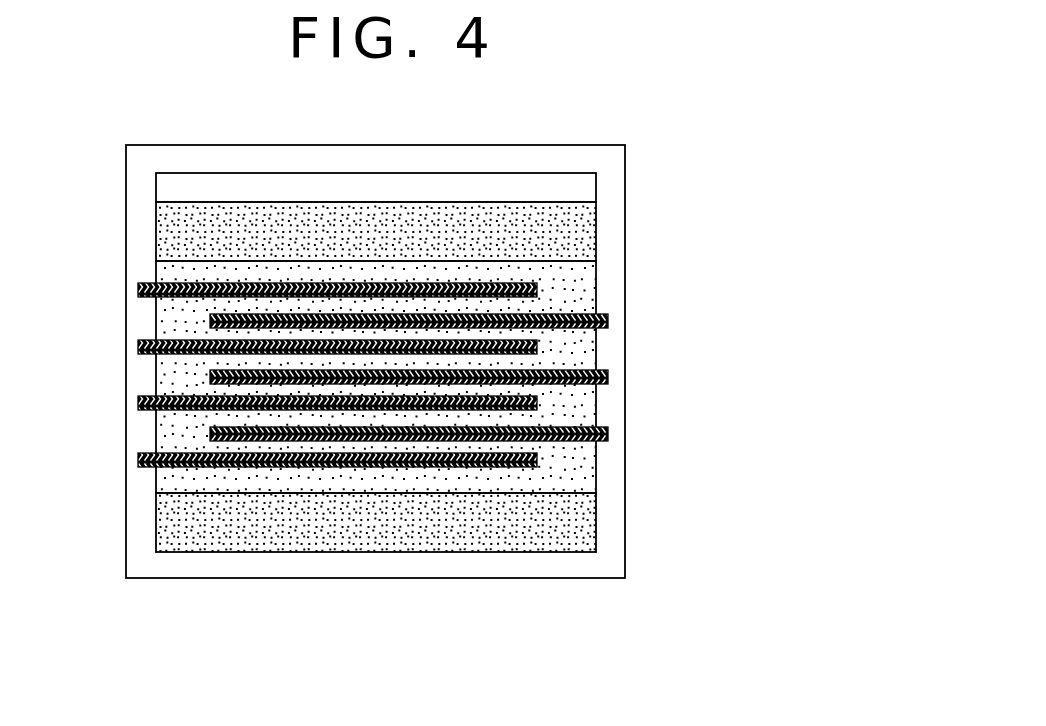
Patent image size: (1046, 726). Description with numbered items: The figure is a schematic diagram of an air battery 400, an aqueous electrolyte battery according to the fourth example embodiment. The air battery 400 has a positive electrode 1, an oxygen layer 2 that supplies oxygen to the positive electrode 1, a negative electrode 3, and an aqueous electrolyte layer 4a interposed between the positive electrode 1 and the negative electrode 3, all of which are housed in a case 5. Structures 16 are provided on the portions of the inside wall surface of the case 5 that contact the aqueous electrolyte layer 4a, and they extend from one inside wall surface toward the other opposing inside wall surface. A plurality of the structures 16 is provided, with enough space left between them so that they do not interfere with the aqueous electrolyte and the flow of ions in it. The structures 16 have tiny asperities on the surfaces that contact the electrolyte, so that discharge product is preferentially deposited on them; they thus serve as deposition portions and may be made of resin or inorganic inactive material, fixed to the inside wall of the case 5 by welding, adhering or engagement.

The air battery 400 is at (416, 107).
The positive electrode 1 is at (175, 230).
The oxygen layer 2 is at (256, 188).
The negative electrode 3 is at (492, 538).
The aqueous electrolyte layer 4a is at (571, 285).
The case 5 is at (607, 563).
The structures 16 is at (138, 403).